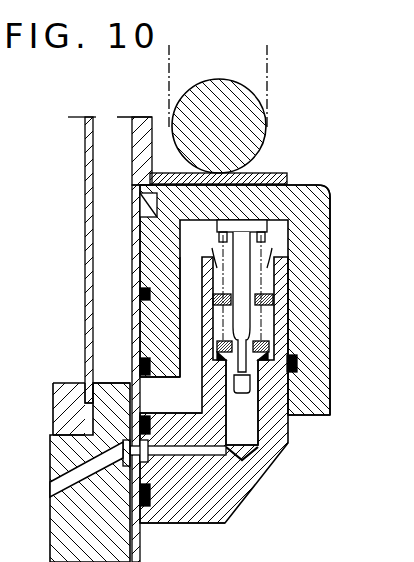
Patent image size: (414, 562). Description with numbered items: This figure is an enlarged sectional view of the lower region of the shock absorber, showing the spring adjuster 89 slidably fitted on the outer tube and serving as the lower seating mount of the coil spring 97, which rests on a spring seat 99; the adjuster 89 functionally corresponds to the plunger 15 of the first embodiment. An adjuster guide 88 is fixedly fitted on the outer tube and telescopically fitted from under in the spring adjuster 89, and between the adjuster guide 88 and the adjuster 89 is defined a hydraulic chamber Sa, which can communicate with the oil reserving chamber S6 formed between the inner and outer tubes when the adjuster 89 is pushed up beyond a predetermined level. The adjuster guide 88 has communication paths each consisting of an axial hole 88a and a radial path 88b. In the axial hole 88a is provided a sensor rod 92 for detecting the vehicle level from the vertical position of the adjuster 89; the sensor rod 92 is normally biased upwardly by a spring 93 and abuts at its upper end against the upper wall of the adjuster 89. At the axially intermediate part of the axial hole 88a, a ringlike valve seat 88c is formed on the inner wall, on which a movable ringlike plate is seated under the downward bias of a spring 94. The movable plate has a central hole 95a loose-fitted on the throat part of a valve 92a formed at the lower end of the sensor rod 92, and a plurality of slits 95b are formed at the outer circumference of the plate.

The oil reserving chamber S6 is at (105, 140).
The hydraulic chamber Sa is at (278, 228).
The coil spring 97 is at (262, 124).
The spring seat 99 is at (287, 178).
The spring adjuster 89 is at (315, 275).
The sensor rod 92 is at (252, 277).
The valve 92a is at (249, 437).
The spring 93 is at (270, 296).
The spring 94 is at (262, 341).
The plunger 15 is at (222, 358).
The central hole 95a is at (288, 416).
The slits 95b is at (213, 333).
The adjuster guide 88 is at (243, 508).
The axial hole 88a is at (255, 478).
The radial path 88b is at (206, 520).
The ringlike valve seat 88c is at (293, 363).